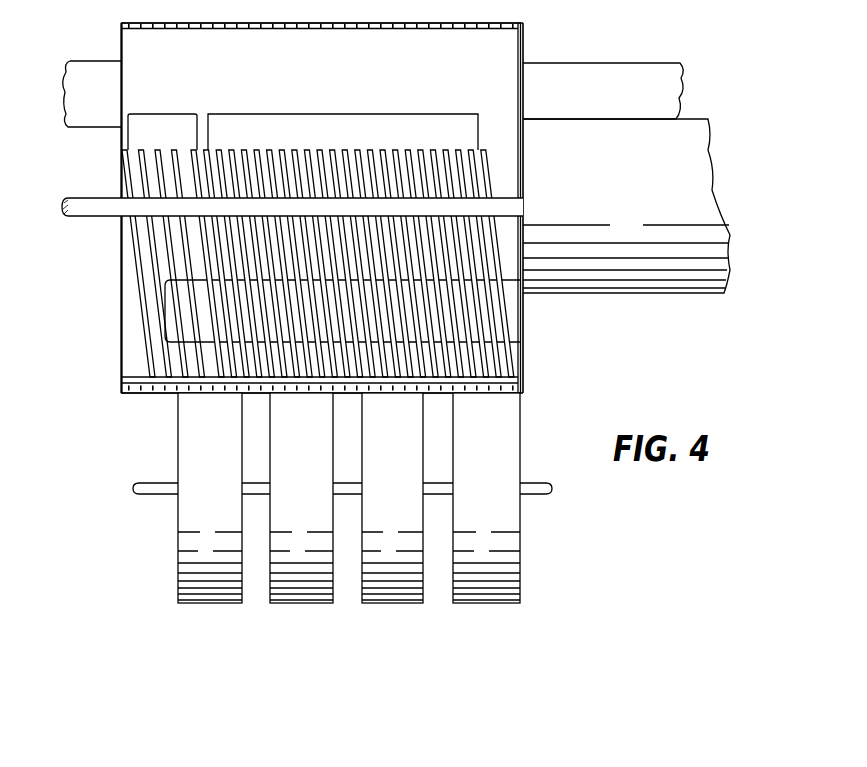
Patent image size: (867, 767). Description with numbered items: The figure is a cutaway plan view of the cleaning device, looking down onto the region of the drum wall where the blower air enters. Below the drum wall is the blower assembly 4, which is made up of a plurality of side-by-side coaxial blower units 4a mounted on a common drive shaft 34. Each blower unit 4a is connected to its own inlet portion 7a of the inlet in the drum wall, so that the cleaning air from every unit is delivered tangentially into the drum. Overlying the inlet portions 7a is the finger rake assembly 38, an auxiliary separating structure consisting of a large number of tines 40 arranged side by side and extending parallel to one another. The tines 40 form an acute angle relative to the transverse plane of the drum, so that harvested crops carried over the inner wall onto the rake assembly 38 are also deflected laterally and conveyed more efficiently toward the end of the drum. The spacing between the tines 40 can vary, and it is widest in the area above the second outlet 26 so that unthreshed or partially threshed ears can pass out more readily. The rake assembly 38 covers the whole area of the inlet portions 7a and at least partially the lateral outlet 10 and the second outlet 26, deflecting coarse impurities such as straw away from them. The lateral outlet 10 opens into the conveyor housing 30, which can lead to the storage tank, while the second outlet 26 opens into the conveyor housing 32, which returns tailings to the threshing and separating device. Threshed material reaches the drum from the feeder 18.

The blower assembly 4 is at (537, 546).
The blower units 4a is at (235, 603).
The inlet portion 7a is at (510, 328).
The lateral outlet 10 is at (358, 132).
The feeder 18 is at (619, 199).
The second outlet 26 is at (165, 132).
The conveyor housing 30 is at (614, 97).
The conveyor housing 32 is at (103, 97).
The drive shaft 34 is at (158, 483).
The finger rake assembly 38 is at (319, 149).
The tines 40 is at (485, 150).